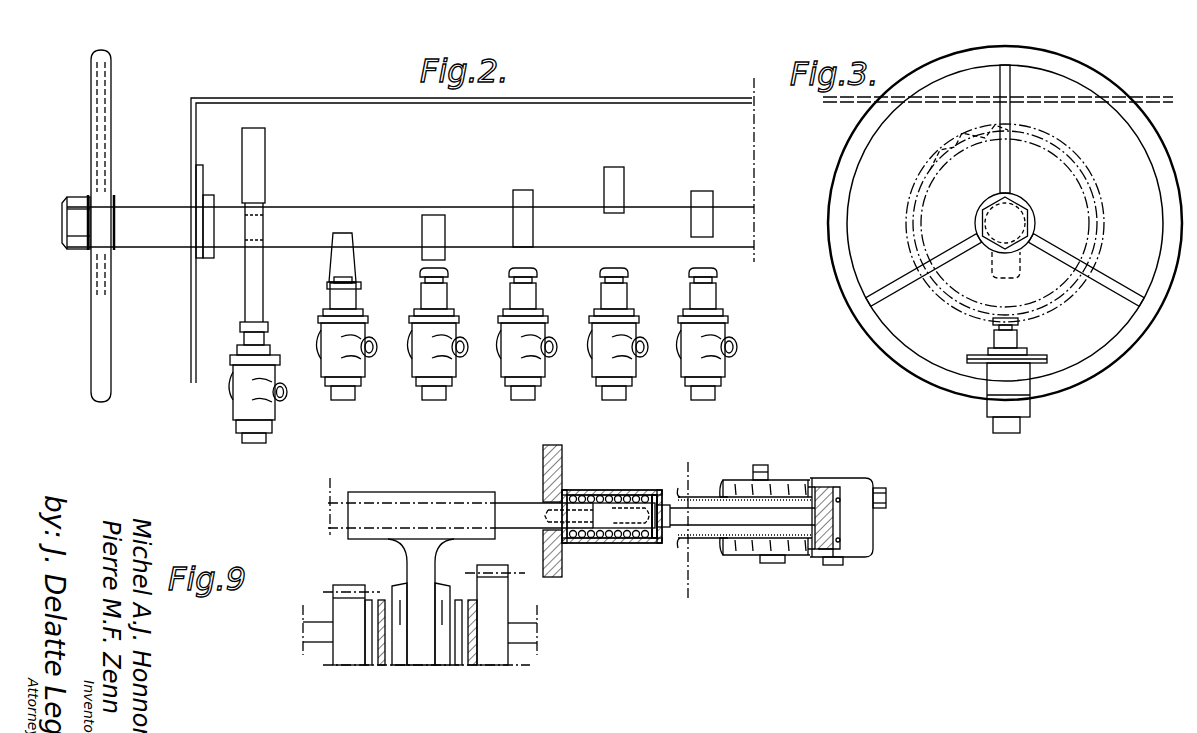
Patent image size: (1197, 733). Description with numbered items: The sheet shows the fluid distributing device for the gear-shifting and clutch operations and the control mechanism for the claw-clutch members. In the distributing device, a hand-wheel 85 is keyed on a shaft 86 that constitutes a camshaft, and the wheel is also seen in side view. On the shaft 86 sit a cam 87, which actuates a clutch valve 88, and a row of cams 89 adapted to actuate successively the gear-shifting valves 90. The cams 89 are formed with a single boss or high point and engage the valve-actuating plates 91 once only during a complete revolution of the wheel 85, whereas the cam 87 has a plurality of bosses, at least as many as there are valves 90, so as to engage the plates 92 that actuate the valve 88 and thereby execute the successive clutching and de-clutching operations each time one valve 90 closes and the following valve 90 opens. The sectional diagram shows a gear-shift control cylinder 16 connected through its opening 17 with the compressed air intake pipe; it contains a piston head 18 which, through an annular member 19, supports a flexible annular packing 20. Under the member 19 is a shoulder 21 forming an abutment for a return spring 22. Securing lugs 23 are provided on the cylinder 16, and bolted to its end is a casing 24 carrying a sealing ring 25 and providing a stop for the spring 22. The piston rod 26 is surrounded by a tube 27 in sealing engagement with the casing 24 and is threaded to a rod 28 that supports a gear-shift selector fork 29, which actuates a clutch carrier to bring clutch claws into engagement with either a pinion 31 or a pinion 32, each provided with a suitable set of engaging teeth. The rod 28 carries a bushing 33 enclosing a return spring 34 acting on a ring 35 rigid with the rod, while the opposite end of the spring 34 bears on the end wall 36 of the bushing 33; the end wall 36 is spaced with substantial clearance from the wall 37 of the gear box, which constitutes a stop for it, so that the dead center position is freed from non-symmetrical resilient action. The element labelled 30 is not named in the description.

In FIG. 9, the gear-shift control cylinder 16 is at (875, 547).
In FIG. 9, the opening 17 is at (887, 497).
In FIG. 9, the piston head 18 is at (836, 550).
In FIG. 9, the annular member 19 is at (821, 487).
In FIG. 9, the flexible annular packing 20 is at (830, 490).
In FIG. 9, the shoulder 21 is at (806, 485).
In FIG. 9, the return spring 22 is at (770, 485).
In FIG. 9, the securing lugs 23 is at (766, 563).
In FIG. 9, the casing 24 is at (733, 480).
In FIG. 9, the sealing ring 25 is at (724, 548).
In FIG. 9, the piston rod 26 is at (689, 500).
In FIG. 9, the tube 27 is at (687, 545).
In FIG. 9, the rod 28 is at (632, 512).
In FIG. 9, the gear-shift selector fork 29 is at (421, 565).
In FIG. 9, the plate 30 is at (398, 640).
In FIG. 9, the pinion 31 is at (348, 650).
In FIG. 9, the pinion 32 is at (495, 640).
In FIG. 9, the bushing 33 is at (597, 490).
In FIG. 9, the return spring 34 is at (621, 492).
In FIG. 9, the ring 35 is at (651, 540).
In FIG. 9, the end wall 36 is at (568, 543).
In FIG. 9, the wall of the gear box 37 is at (563, 468).
In FIG. 2, the hand-wheel 85 is at (112, 86).
In FIG. 3, the hand-wheel 85 is at (1148, 140).
In FIG. 2, the shaft 86 is at (120, 213).
In FIG. 2, the cam 87 is at (262, 157).
In FIG. 3, the cam 87 is at (1032, 162).
In FIG. 2, the clutch valve 88 is at (243, 402).
In FIG. 3, the clutch valve 88 is at (1018, 408).
In FIG. 2, the cams 89 is at (341, 255).
In FIG. 3, the cams 89 is at (1006, 270).
In FIG. 2, the gear-shifting valves 90 is at (343, 365).
In FIG. 2, the valve-actuating plates 91 is at (362, 285).
In FIG. 2, the plates 92 is at (240, 327).